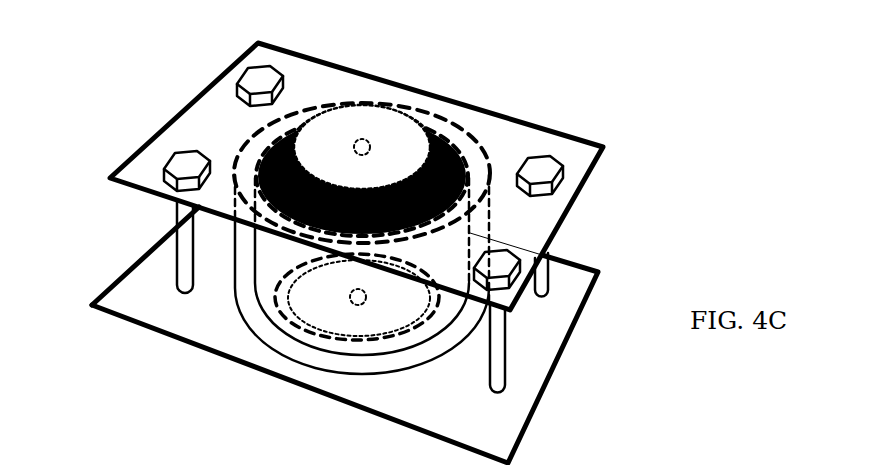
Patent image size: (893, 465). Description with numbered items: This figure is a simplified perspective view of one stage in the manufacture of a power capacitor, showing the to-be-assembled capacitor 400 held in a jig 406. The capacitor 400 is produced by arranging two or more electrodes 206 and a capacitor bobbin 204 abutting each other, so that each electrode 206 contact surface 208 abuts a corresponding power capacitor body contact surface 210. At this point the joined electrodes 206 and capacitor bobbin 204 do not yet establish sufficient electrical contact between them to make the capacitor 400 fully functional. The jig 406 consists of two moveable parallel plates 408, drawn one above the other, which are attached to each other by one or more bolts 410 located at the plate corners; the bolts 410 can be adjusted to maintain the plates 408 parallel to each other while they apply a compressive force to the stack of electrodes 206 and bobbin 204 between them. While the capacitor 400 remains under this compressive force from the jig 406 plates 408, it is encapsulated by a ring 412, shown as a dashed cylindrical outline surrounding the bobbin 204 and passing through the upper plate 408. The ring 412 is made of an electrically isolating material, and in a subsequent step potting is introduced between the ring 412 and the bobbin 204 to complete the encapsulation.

The capacitor 400 is at (350, 54).
The capacitor bobbin 204 is at (270, 288).
The electrode 206 is at (398, 124).
The contact surface 208 is at (370, 318).
The power capacitor body contact surface 210 is at (450, 134).
The jig 406 is at (137, 153).
The plate 408 is at (513, 148).
The bolt 410 is at (255, 77).
The ring 412 is at (260, 134).